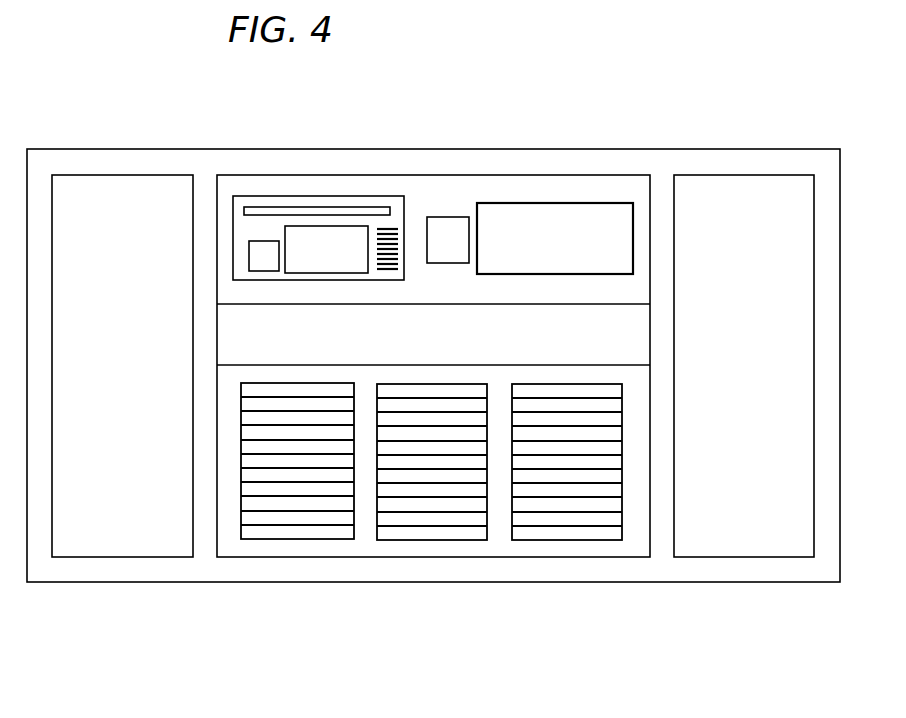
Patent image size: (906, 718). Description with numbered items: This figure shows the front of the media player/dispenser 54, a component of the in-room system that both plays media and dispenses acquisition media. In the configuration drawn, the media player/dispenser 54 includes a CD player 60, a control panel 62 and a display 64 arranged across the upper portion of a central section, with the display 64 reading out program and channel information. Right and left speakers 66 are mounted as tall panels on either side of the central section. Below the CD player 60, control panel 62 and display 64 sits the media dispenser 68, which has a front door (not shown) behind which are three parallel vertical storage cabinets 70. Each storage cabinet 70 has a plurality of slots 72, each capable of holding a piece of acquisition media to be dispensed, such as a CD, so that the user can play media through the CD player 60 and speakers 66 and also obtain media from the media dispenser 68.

The media player/dispenser 54 is at (676, 91).
The CD player 60 is at (308, 208).
The control panel 62 is at (445, 217).
The display 64 is at (535, 203).
The right and left speakers 66 is at (123, 200).
The media dispenser 68 is at (385, 556).
The storage cabinets 70 is at (297, 540).
The slots 72 is at (487, 503).